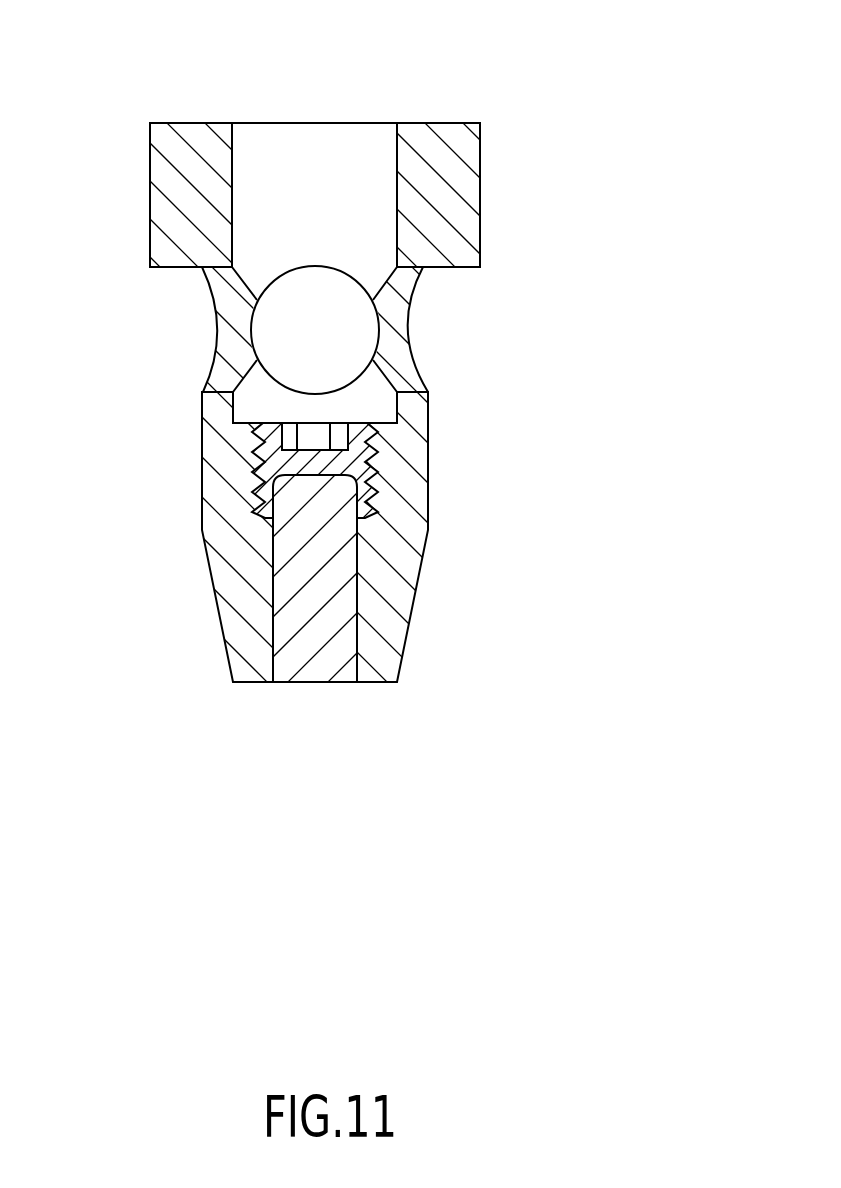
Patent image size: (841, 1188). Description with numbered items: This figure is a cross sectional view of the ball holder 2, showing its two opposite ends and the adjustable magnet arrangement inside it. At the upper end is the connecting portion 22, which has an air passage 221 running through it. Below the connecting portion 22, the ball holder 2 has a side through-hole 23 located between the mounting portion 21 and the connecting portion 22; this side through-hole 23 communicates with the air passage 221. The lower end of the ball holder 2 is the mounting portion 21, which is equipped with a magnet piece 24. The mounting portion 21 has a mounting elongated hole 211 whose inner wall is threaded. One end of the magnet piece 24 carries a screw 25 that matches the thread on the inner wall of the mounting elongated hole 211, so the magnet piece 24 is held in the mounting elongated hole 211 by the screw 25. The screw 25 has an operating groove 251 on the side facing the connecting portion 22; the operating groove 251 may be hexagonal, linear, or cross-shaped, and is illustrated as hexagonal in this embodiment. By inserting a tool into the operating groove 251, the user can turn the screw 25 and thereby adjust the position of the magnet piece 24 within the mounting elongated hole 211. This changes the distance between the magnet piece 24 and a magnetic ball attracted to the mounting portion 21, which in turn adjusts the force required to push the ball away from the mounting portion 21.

The ball holder 2 is at (97, 105).
The connecting portion 22 is at (420, 474).
The air passage 221 is at (367, 124).
The side through-hole 23 is at (413, 355).
The mounting portion 21 is at (420, 594).
The mounting elongated hole 211 is at (287, 633).
The screw 25 is at (420, 594).
The operating groove 251 is at (307, 423).
The magnet piece 24 is at (345, 560).